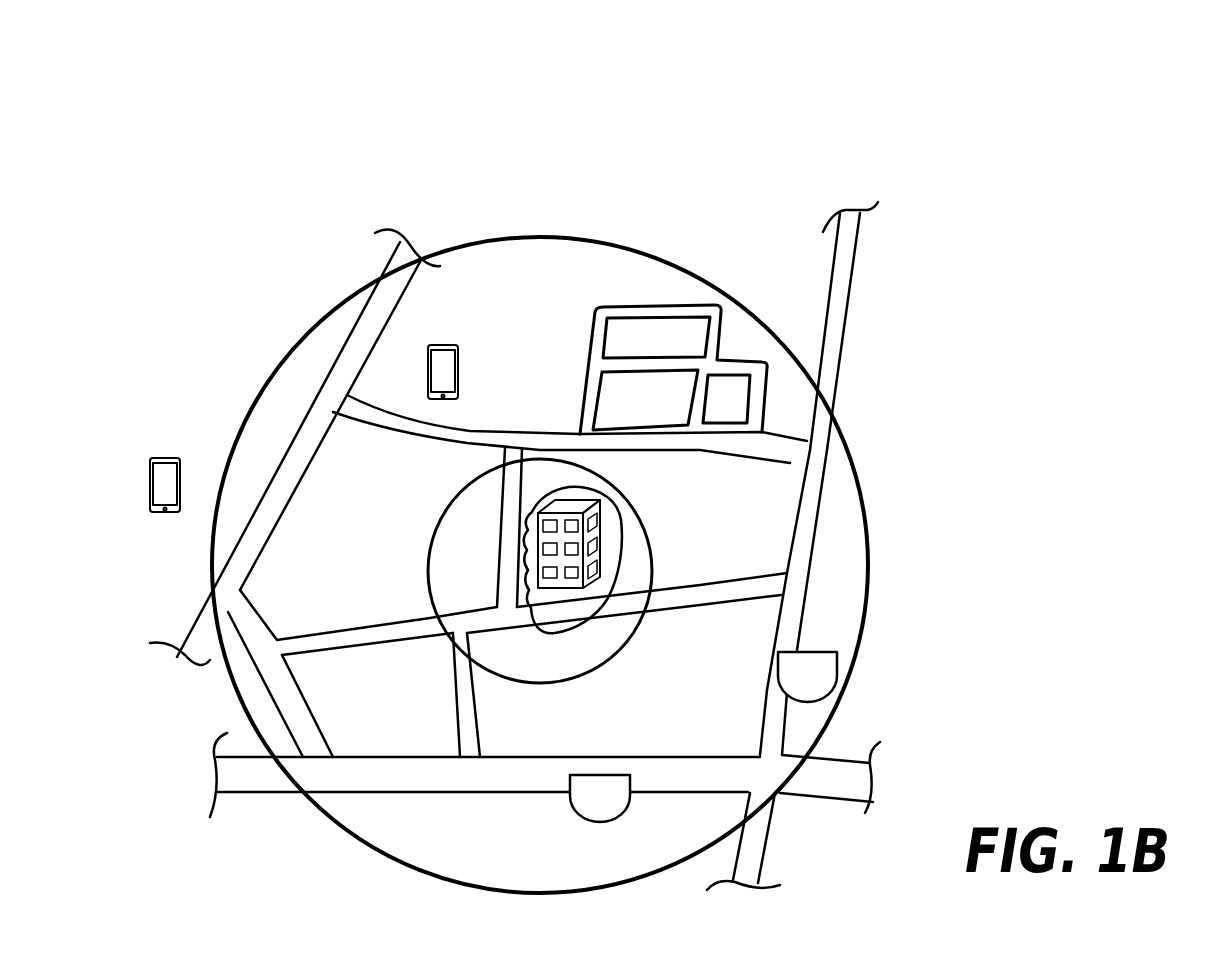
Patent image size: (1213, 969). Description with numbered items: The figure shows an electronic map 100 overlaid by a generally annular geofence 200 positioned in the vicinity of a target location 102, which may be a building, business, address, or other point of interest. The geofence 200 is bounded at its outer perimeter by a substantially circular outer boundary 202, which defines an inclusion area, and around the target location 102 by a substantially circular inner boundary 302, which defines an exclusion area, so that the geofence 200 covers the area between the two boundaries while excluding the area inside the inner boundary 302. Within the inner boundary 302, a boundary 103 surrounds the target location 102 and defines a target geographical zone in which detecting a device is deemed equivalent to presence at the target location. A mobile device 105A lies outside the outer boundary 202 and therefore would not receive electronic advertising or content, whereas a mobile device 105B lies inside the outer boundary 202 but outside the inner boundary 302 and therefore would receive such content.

The electronic map 100 is at (1090, 104).
The geofence 200 is at (897, 422).
The outer boundary 202 is at (867, 570).
The inner boundary 302 is at (630, 638).
The target location 102 is at (600, 517).
The boundary 103 is at (543, 633).
The mobile device 105A is at (166, 457).
The mobile device 105B is at (443, 342).